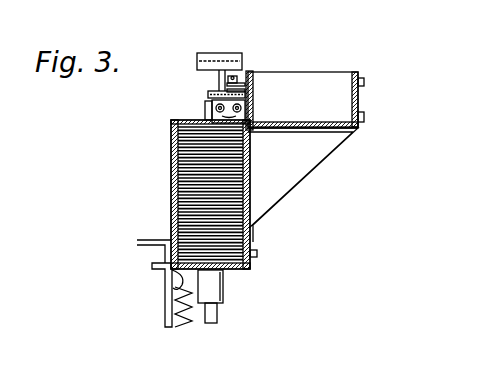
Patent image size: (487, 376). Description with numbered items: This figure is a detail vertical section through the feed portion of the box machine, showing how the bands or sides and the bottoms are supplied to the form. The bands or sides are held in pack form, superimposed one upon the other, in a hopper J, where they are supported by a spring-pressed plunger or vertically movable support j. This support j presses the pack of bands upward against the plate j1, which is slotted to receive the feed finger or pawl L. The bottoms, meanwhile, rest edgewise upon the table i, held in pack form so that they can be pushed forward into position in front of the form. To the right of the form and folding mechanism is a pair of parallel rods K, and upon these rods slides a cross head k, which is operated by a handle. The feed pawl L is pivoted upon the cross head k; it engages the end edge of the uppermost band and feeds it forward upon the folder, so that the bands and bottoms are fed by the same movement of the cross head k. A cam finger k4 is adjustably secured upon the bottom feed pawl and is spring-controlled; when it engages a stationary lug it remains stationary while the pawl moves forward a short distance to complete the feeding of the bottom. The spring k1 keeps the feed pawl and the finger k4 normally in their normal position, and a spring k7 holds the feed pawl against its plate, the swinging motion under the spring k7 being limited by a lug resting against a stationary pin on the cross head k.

The hopper J is at (171, 140).
The spring-pressed plunger j is at (208, 285).
The plate j1 is at (192, 120).
The table i is at (293, 127).
The parallel rods K is at (248, 106).
The sliding cross head k is at (220, 114).
The spring k1 is at (208, 60).
The cam finger k4 is at (243, 75).
The spring k7 is at (213, 92).
The feed finger or pawl L is at (207, 102).